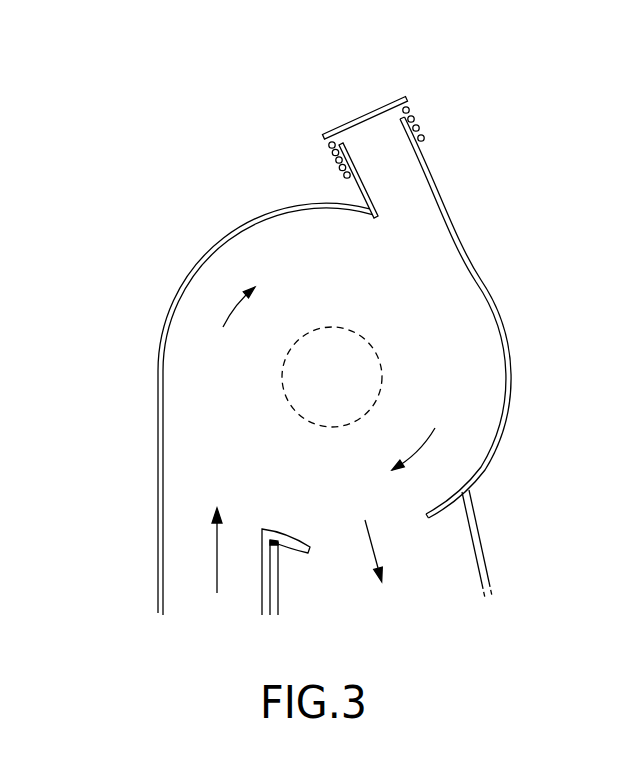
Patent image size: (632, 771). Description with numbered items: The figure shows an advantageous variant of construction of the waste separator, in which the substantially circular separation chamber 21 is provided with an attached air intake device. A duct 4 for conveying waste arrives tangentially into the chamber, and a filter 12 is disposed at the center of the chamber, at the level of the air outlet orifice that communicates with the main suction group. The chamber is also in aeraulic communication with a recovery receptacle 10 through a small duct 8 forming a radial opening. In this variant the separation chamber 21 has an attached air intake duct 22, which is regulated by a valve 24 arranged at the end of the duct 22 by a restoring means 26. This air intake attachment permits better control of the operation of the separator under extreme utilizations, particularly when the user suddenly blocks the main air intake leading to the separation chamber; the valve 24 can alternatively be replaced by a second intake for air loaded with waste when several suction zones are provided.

The duct 4 is at (158, 547).
The small duct 8 is at (398, 540).
The recovery receptacle 10 is at (485, 545).
The filter 12 is at (280, 378).
The separation chamber 21 is at (285, 207).
The air intake duct 22 is at (433, 173).
The valve 24 is at (377, 106).
The restoring means 26 is at (417, 117).